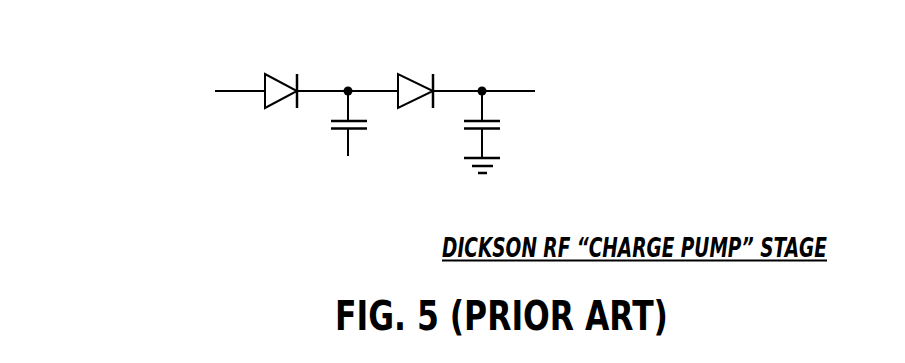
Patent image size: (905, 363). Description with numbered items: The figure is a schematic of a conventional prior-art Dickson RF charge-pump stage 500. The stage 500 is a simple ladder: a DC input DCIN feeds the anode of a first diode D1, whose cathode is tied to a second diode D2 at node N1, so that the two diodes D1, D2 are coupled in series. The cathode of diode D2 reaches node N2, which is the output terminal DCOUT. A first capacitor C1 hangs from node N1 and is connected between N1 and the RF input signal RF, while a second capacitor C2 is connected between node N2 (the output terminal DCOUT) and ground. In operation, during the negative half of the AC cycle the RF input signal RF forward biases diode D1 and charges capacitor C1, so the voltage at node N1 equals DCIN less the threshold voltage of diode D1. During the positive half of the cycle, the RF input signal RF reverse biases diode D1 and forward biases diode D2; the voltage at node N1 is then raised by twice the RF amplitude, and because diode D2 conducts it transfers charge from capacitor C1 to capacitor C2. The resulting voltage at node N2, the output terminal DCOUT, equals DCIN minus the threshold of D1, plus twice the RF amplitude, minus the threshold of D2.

The Dickson RF charge-pump stage 500 is at (136, 38).
The DC input DCIN is at (214, 92).
The output terminal DCOUT is at (546, 92).
The diode D1 is at (281, 77).
The diode D2 is at (415, 76).
The node N1 is at (347, 79).
The node N2 is at (481, 79).
The capacitor C1 is at (363, 123).
The capacitor C2 is at (497, 132).
The RF input signal RF is at (347, 162).